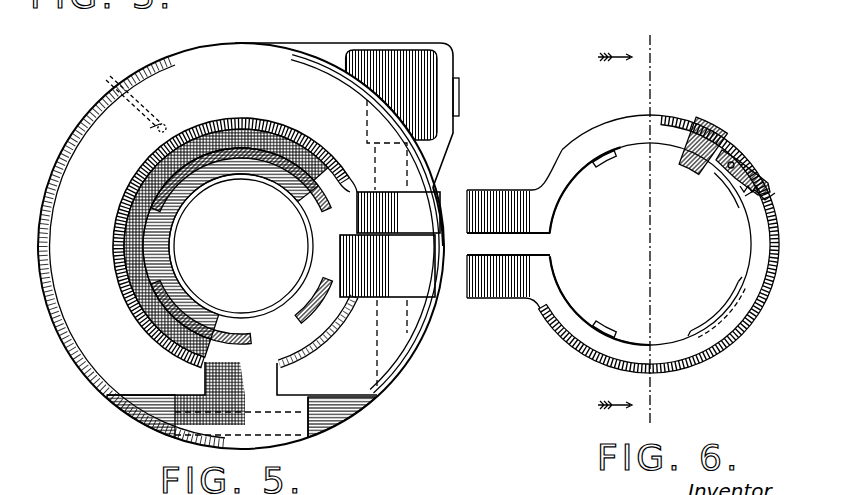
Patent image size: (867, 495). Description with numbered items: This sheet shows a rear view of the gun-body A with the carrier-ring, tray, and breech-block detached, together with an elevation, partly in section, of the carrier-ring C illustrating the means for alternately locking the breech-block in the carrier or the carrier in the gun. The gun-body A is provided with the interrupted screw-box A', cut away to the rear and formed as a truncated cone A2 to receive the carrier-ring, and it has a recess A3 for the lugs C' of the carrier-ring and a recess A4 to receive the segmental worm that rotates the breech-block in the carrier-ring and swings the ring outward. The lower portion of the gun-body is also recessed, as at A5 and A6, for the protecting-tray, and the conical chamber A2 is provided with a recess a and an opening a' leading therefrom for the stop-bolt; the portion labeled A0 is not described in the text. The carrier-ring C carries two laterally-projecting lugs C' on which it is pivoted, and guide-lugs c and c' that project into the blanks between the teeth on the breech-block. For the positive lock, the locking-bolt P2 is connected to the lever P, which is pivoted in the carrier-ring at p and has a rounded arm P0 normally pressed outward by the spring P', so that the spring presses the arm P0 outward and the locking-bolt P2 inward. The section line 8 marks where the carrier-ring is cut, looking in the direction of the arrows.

In FIG. 5, the gun-body A is at (248, 246).
In FIG. 5, the interrupted screw-box A' is at (235, 243).
In FIG. 5, the truncated cone A2 is at (254, 118).
In FIG. 5, the boss A0 is at (443, 58).
In FIG. 5, the recess A3 is at (390, 244).
In FIG. 5, the recess A4 is at (417, 240).
In FIG. 5, the recess A5 is at (375, 421).
In FIG. 5, the recess A6 is at (216, 393).
In FIG. 5, the recess a is at (130, 141).
In FIG. 5, the opening a' is at (129, 93).
In FIG. 6, the section line 8 is at (627, 227).
In FIG. 6, the carrier-ring C is at (658, 232).
In FIG. 6, the lugs C' is at (514, 244).
In FIG. 6, the guide-lug c' is at (610, 244).
In FIG. 6, the guide-lug c is at (716, 255).
In FIG. 6, the lever P is at (743, 169).
In FIG. 6, the pivot p is at (731, 160).
In FIG. 6, the rounded arm P0 is at (763, 182).
In FIG. 6, the spring P' is at (770, 193).
In FIG. 6, the locking-bolt P2 is at (698, 168).